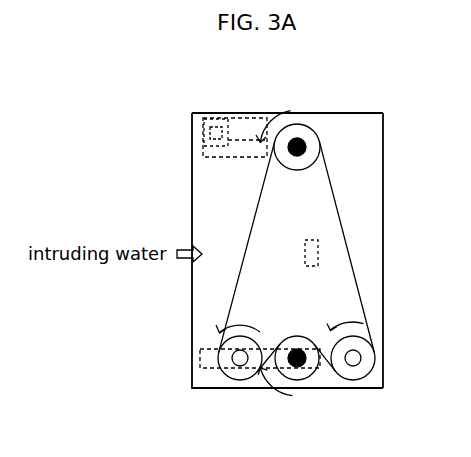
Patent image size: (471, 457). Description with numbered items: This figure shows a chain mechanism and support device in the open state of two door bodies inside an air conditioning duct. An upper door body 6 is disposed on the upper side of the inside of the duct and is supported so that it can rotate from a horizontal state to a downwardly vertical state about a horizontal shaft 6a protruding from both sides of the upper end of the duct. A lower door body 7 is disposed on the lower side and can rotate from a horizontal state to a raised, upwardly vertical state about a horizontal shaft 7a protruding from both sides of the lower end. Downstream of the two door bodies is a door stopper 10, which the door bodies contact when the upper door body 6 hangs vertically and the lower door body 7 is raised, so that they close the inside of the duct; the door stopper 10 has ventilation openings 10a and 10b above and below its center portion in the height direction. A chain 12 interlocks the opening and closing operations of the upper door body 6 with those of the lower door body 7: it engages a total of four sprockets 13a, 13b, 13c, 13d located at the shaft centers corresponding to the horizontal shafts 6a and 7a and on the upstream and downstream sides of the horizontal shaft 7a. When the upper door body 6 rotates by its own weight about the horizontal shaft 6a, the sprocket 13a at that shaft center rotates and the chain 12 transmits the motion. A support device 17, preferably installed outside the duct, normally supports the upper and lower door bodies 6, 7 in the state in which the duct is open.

The upper door body 6 is at (244, 150).
The horizontal shaft 6a is at (299, 140).
The lower door body 7 is at (200, 358).
The horizontal shaft 7a is at (297, 348).
The door stopper 10 is at (316, 253).
The ventilation opening 10a is at (314, 190).
The ventilation opening 10b is at (314, 298).
The chain 12 is at (258, 210).
The sprocket 13a is at (285, 163).
The sprocket 13b is at (298, 372).
The sprocket 13c is at (238, 373).
The sprocket 13d is at (356, 372).
The support device 17 is at (203, 135).